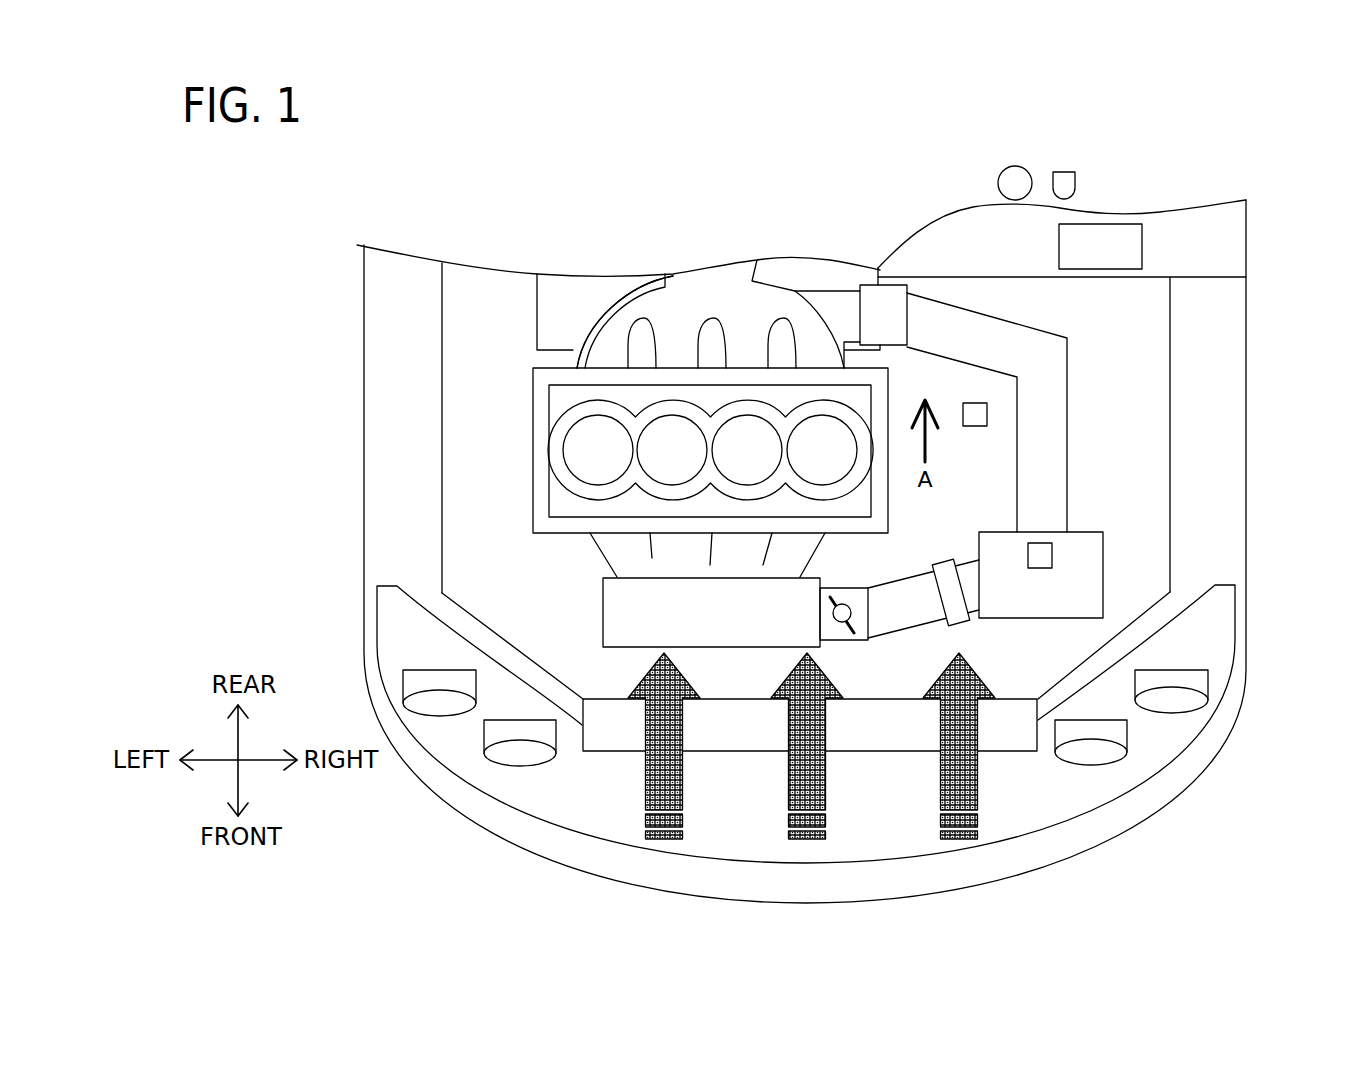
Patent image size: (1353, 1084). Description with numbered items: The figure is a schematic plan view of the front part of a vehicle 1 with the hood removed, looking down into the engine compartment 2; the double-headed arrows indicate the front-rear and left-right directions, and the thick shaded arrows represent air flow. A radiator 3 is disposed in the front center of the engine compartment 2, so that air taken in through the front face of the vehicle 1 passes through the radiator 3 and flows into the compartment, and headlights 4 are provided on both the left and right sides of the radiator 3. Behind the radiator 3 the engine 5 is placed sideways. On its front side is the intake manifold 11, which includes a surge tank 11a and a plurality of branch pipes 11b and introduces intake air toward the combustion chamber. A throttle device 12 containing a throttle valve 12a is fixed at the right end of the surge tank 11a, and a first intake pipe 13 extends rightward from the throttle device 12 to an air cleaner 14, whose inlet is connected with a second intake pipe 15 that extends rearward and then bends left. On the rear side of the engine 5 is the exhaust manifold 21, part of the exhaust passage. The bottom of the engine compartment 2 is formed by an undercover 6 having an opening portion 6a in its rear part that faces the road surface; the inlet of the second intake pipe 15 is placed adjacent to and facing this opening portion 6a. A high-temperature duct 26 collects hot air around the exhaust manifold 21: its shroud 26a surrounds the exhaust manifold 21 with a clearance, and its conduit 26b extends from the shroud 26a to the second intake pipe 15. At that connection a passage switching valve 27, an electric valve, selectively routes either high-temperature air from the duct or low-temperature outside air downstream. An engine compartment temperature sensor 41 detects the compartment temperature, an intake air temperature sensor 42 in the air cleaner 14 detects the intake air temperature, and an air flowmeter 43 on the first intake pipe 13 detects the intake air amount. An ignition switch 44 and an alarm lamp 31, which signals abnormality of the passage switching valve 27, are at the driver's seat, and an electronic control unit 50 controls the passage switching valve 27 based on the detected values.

The vehicle 1 is at (332, 313).
The engine compartment 2 is at (1094, 400).
The radiator 3 is at (617, 748).
The headlights 4 is at (507, 758).
The engine 5 is at (533, 431).
The undercover 6 is at (1120, 437).
The opening portion 6a is at (543, 307).
The intake manifold 11 is at (667, 601).
The surge tank 11a is at (620, 638).
The branch pipes 11b is at (682, 553).
The throttle device 12 is at (855, 587).
The throttle valve 12a is at (848, 633).
The first intake pipe 13 is at (915, 582).
The air cleaner 14 is at (1090, 580).
The second intake pipe 15 is at (1035, 467).
The exhaust manifold 21 is at (583, 330).
The high-temperature duct 26 is at (617, 292).
The shroud 26a is at (760, 295).
The conduit 26b is at (848, 305).
The passage switching valve 27 is at (883, 292).
The alarm lamp 31 is at (1010, 185).
The engine compartment temperature sensor 41 is at (968, 406).
The intake air temperature sensor 42 is at (1050, 552).
The air flowmeter 43 is at (943, 570).
The ignition switch 44 is at (1067, 190).
The electronic control unit 50 is at (1142, 255).